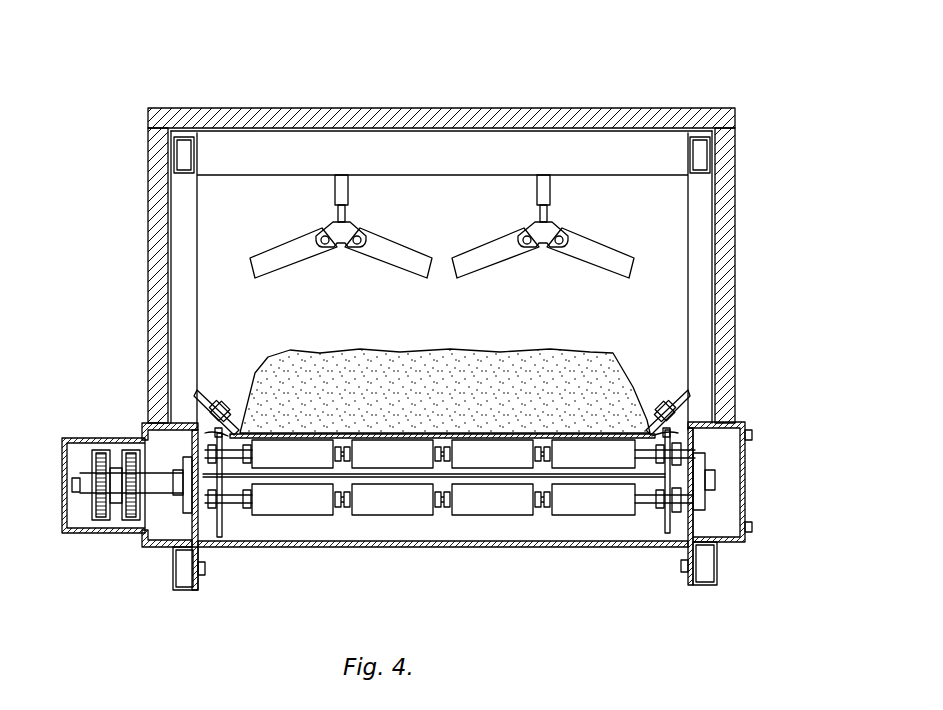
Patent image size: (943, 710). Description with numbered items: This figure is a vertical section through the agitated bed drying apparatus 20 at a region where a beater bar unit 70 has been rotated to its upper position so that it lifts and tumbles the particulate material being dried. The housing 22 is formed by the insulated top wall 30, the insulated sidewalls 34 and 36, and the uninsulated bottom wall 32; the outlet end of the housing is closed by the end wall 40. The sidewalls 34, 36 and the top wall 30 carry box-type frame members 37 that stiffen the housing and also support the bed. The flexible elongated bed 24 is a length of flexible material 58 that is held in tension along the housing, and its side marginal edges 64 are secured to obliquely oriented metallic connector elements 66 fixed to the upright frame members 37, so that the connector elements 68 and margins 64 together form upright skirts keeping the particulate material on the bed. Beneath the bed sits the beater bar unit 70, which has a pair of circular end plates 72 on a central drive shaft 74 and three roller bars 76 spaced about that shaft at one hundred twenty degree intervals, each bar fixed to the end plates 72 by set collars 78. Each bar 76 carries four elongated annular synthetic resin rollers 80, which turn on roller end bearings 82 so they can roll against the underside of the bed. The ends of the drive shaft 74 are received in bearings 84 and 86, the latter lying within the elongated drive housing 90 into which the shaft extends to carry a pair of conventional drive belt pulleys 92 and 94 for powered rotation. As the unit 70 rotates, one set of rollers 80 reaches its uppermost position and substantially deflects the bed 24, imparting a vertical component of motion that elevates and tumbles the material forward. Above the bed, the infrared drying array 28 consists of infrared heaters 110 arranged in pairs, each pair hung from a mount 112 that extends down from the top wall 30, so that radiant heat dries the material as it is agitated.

The agitated bed drying apparatus 20 is at (750, 82).
The housing 22 is at (459, 246).
The flexible elongated bed 24 is at (650, 363).
The infrared drying array 28 is at (445, 232).
The top wall 30 is at (448, 108).
The bottom wall 32 is at (448, 553).
The sidewall 34 is at (735, 250).
The sidewall 36 is at (150, 250).
The frame members 37 is at (445, 165).
The end wall 40 is at (496, 301).
The flexible material 58 is at (408, 375).
The side marginal edges 64 is at (445, 384).
The connector elements 66 is at (678, 398).
The connector elements 68 is at (208, 392).
The beater bar unit 70 is at (449, 472).
The circular end plates 72 is at (198, 535).
The central drive shaft 74 is at (288, 480).
The roller bars 76 is at (657, 503).
The set collars 78 is at (206, 452).
The rollers 80 is at (512, 505).
The roller end bearings 82 is at (340, 455).
The bearings 84 is at (708, 490).
The bearings 86 is at (182, 510).
The drive housing 90 is at (96, 492).
The drive belt pulley 92 is at (130, 442).
The drive belt pulley 94 is at (98, 520).
The infrared heaters 110 is at (262, 262).
The mount 112 is at (338, 190).